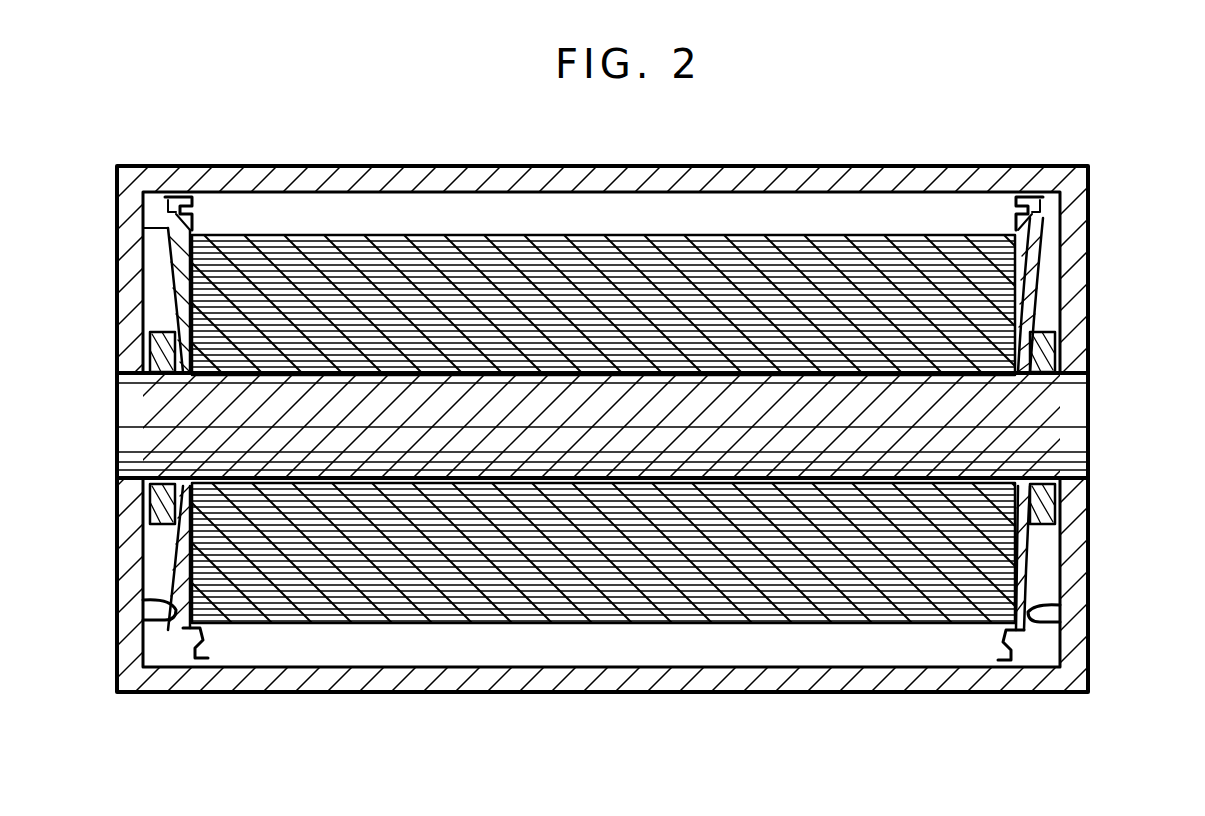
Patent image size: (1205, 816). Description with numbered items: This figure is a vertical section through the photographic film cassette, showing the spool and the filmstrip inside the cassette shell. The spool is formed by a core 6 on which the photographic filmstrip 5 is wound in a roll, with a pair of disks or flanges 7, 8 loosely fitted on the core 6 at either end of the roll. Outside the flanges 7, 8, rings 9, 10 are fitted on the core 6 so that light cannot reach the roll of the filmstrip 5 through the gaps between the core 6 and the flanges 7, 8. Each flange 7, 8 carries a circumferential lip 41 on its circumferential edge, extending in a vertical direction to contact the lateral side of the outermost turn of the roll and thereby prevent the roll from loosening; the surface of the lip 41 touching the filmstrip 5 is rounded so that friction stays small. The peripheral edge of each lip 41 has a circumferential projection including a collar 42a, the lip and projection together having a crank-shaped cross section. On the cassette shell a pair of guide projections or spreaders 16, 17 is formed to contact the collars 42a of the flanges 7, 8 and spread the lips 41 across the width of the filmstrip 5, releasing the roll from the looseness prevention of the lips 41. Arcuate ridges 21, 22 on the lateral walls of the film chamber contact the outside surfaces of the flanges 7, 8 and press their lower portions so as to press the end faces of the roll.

The photographic filmstrip 5 is at (372, 238).
The core 6 is at (1090, 432).
The flange 7 is at (180, 568).
The flange 8 is at (1035, 305).
The ring 9 is at (143, 503).
The ring 10 is at (1060, 512).
The guide projection 16 is at (193, 200).
The guide projection 17 is at (1012, 200).
The arcuate ridge 21 is at (162, 608).
The arcuate ridge 22 is at (1045, 620).
The circumferential lip 41 is at (1040, 232).
The collar 42a is at (1043, 205).